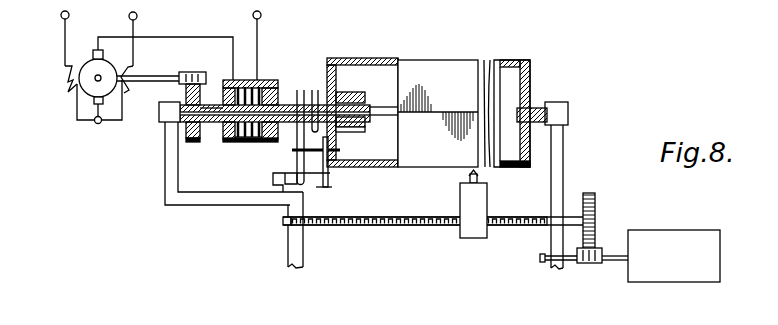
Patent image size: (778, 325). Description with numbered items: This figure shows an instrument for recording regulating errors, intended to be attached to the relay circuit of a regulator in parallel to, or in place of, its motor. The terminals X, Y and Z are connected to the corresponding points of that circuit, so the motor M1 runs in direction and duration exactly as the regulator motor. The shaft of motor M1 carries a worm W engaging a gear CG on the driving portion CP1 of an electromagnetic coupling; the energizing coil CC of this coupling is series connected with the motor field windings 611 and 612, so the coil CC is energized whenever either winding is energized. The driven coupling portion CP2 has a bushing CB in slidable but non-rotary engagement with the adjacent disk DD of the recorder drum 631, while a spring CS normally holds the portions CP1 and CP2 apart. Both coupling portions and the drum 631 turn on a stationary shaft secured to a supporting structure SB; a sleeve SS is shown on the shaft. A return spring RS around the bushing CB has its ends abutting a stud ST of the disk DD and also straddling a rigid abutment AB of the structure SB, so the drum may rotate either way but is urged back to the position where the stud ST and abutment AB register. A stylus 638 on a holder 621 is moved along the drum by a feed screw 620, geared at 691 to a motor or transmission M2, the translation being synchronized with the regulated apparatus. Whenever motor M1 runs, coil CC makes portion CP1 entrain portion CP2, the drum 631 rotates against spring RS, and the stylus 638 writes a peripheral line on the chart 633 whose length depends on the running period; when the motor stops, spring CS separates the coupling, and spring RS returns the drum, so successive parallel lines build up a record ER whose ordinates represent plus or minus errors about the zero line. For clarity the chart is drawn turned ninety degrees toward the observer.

The terminal X is at (61, 14).
The terminal Y is at (137, 14).
The terminal Z is at (261, 14).
The motor M1 is at (95, 53).
The motor, driving mechanism or transmission M2 is at (655, 284).
The motor field winding 611 is at (135, 67).
The motor field winding 612 is at (67, 90).
The worm W is at (194, 73).
The gear CG is at (195, 142).
The energizing coil CC is at (216, 122).
The driving coupling portion CP1 is at (248, 113).
The driven coupling portion CP2 is at (272, 87).
The spring CS is at (251, 85).
The return spring RS is at (306, 93).
The stud ST is at (291, 151).
The rigid abutment AB is at (331, 184).
The supporting or base structure SB is at (221, 206).
The disk DD is at (337, 82).
The bushing CB is at (358, 126).
The shaft sleeve SS is at (376, 107).
The record ER is at (421, 99).
The chart 633 is at (441, 104).
The recorder drum 631 is at (531, 78).
The stylus 638 is at (468, 178).
The feed screw 620 is at (362, 226).
The holder 621 is at (475, 239).
The gearing 691 is at (597, 203).